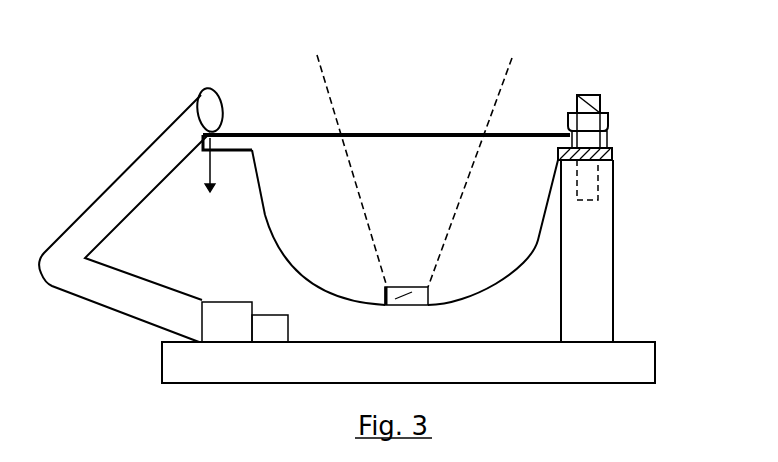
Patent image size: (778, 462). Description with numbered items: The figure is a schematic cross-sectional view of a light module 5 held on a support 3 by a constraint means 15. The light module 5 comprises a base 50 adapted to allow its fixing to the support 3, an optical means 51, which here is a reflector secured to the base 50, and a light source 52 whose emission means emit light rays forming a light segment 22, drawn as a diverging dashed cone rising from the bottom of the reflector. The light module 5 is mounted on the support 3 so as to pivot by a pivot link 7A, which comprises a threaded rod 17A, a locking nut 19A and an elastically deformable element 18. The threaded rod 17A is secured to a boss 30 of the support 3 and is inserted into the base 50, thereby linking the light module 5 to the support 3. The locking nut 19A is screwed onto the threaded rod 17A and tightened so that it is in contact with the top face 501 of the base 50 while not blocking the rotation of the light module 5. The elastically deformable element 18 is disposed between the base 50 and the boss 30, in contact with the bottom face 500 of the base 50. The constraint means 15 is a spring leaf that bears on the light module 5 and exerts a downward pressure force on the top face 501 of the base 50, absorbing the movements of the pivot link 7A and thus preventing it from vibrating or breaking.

The support 3 is at (628, 357).
The constraint means 15 is at (143, 188).
The base 50 is at (224, 131).
The top face 501 is at (226, 115).
The bottom face 500 is at (238, 153).
The light module 5 is at (410, 124).
The optical means 51 is at (428, 303).
The light source 52 is at (403, 298).
The light segment 22 is at (505, 80).
The pivot link 7A is at (648, 126).
The threaded rod 17A is at (608, 113).
The locking nut 19A is at (608, 131).
The elastically deformable element 18 is at (612, 160).
The boss 30 is at (600, 267).